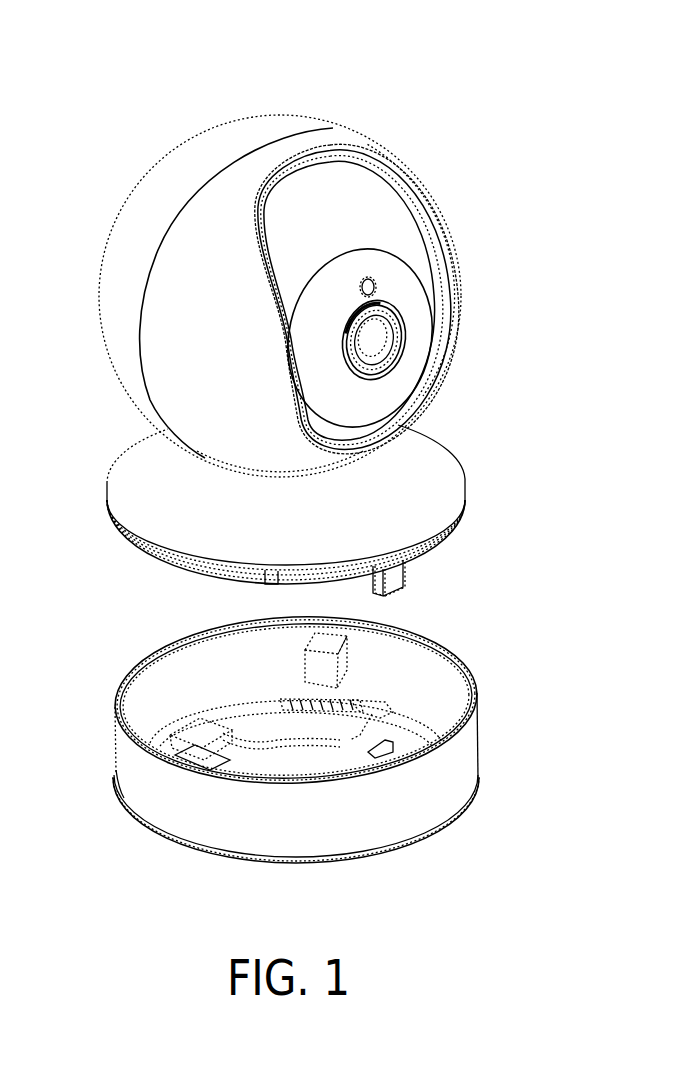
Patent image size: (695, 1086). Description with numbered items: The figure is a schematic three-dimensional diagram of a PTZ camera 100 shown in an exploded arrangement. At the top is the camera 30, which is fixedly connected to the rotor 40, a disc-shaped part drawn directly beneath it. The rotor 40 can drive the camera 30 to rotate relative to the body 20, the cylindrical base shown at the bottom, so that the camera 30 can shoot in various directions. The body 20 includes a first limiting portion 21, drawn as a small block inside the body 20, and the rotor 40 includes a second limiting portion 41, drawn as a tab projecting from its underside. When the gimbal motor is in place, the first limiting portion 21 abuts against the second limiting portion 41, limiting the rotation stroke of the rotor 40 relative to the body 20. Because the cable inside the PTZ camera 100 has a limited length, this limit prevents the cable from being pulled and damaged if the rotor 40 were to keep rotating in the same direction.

The PTZ camera 100 is at (78, 28).
The camera 30 is at (455, 340).
The rotor 40 is at (114, 480).
The second limiting portion 41 is at (392, 582).
The body 20 is at (132, 782).
The first limiting portion 21 is at (350, 671).